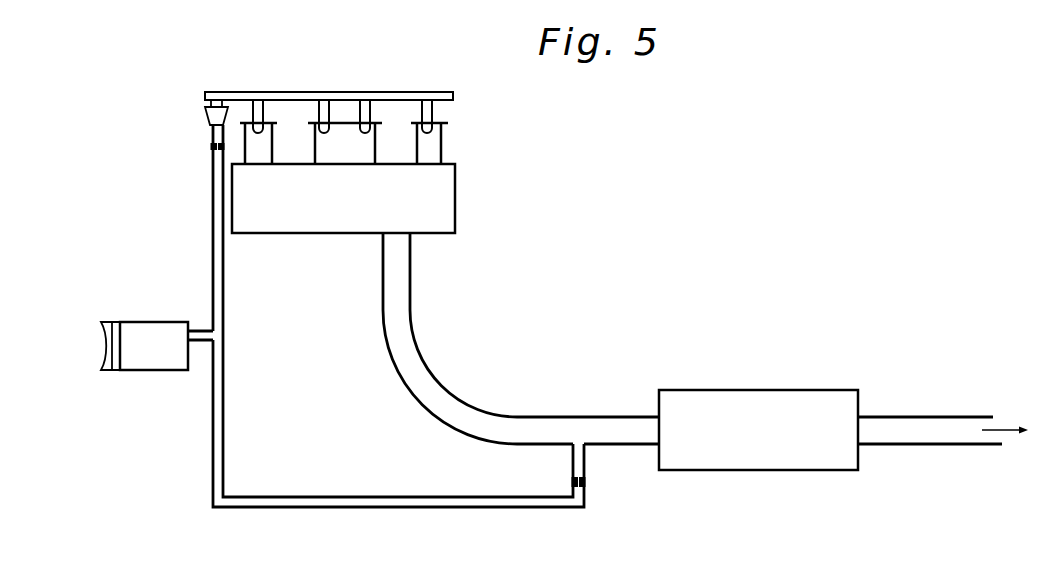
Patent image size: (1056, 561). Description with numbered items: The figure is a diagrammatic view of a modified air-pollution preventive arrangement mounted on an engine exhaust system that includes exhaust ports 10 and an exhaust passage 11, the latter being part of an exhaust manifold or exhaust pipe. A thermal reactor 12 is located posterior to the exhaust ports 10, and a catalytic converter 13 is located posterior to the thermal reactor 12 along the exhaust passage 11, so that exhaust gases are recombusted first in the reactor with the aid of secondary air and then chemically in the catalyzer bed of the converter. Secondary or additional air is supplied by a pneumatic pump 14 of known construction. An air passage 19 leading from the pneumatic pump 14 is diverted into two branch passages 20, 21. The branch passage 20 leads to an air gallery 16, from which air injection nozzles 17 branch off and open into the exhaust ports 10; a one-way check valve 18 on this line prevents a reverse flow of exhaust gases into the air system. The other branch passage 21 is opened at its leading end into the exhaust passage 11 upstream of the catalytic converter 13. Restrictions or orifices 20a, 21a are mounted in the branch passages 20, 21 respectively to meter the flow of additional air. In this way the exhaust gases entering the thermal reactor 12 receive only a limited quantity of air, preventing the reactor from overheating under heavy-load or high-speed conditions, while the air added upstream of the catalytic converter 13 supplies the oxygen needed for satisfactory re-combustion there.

The exhaust ports 10 is at (441, 143).
The exhaust passage 11 is at (478, 408).
The thermal reactor 12 is at (328, 234).
The catalytic converter 13 is at (772, 471).
The pneumatic pump 14 is at (145, 325).
The air gallery 16 is at (453, 92).
The air injection nozzles 17 is at (433, 108).
The one-way check valve 18 is at (205, 113).
The air passage 19 is at (200, 340).
The branch passage 20 is at (225, 279).
The restriction or orifice 20a is at (212, 147).
The branch passage 21 is at (224, 417).
The restriction or orifice 21a is at (586, 481).